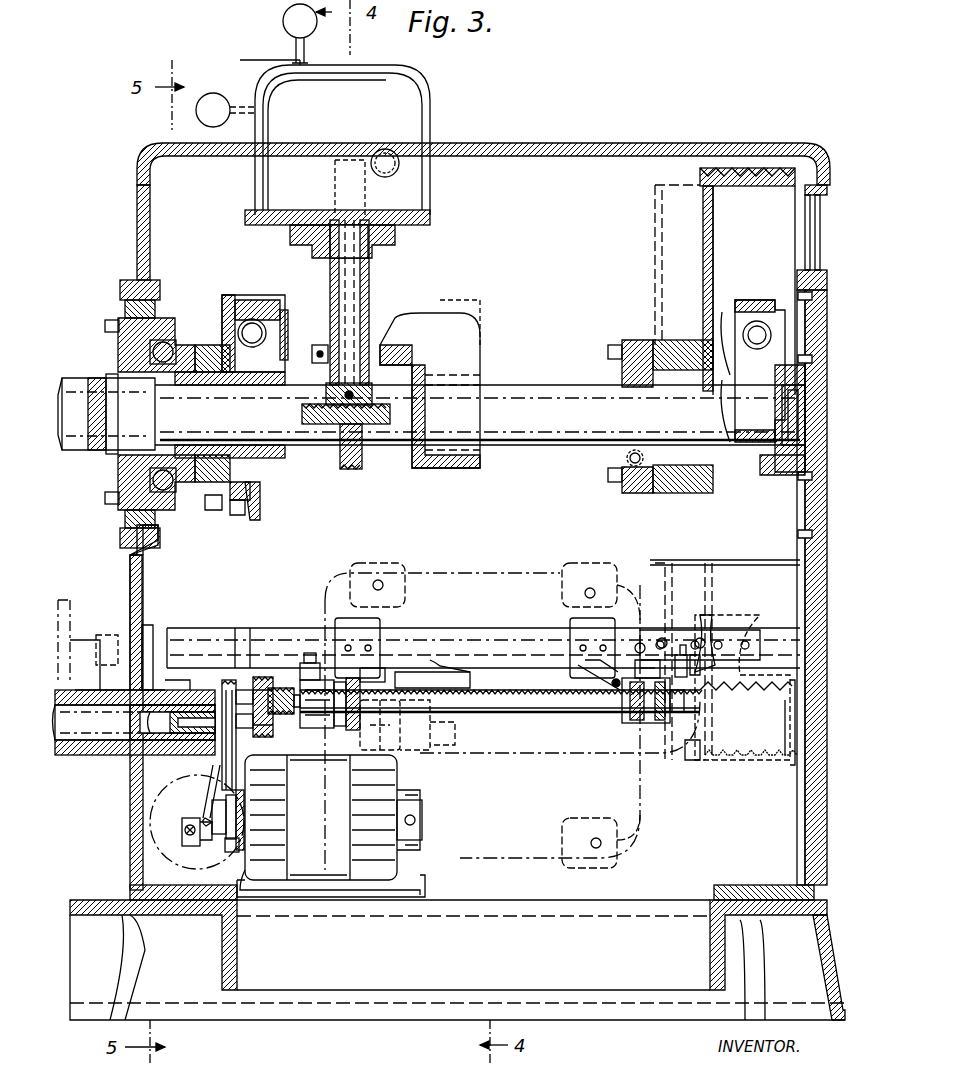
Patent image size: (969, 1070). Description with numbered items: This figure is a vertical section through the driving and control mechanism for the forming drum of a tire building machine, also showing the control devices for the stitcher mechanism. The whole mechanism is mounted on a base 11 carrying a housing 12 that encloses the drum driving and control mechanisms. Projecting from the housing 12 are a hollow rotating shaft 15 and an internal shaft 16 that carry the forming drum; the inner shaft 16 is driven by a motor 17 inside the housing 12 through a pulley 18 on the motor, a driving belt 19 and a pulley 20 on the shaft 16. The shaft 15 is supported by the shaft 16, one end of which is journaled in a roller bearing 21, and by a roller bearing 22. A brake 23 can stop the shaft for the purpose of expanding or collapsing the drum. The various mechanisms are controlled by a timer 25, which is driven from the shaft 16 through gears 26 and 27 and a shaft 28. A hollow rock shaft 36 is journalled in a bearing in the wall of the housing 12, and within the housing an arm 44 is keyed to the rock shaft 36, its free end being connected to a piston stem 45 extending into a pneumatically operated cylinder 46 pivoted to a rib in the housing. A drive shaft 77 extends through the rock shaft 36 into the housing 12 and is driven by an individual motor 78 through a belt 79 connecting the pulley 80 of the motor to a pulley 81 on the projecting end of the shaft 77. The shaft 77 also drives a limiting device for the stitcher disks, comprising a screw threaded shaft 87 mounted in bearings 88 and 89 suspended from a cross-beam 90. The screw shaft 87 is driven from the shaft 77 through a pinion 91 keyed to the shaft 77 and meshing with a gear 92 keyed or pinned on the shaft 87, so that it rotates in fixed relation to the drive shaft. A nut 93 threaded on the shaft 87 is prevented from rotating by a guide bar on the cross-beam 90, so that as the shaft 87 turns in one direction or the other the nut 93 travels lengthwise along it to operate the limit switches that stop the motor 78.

The base 11 is at (185, 917).
The housing 12 is at (150, 155).
The hollow rotating shaft 15 is at (80, 380).
The internal shaft 16 is at (538, 388).
The motor 17 is at (477, 575).
The pulley 18 is at (703, 762).
The driving belt 19 is at (700, 170).
The pulley 20 is at (705, 197).
The roller bearing 21 is at (782, 402).
The roller bearing 22 is at (122, 490).
The brake 23 is at (728, 305).
The timer 25 is at (430, 102).
The gear 26 is at (352, 460).
The gear 27 is at (378, 448).
The shaft 28 is at (360, 297).
The hollow rock shaft 36 is at (78, 665).
The arm 44 is at (205, 803).
The piston stem 45 is at (182, 832).
The pneumatically operated cylinder 46 is at (162, 850).
The drive shaft 77 is at (128, 760).
The motor 78 is at (398, 788).
The belt 79 is at (238, 806).
The pulley 80 is at (236, 834).
The pulley 81 is at (222, 685).
The screw threaded shaft 87 is at (540, 712).
The bearing 88 is at (315, 722).
The bearing 89 is at (642, 712).
The cross-beam 90 is at (232, 632).
The pinion 91 is at (320, 742).
The gear 92 is at (262, 738).
The nut 93 is at (400, 718).